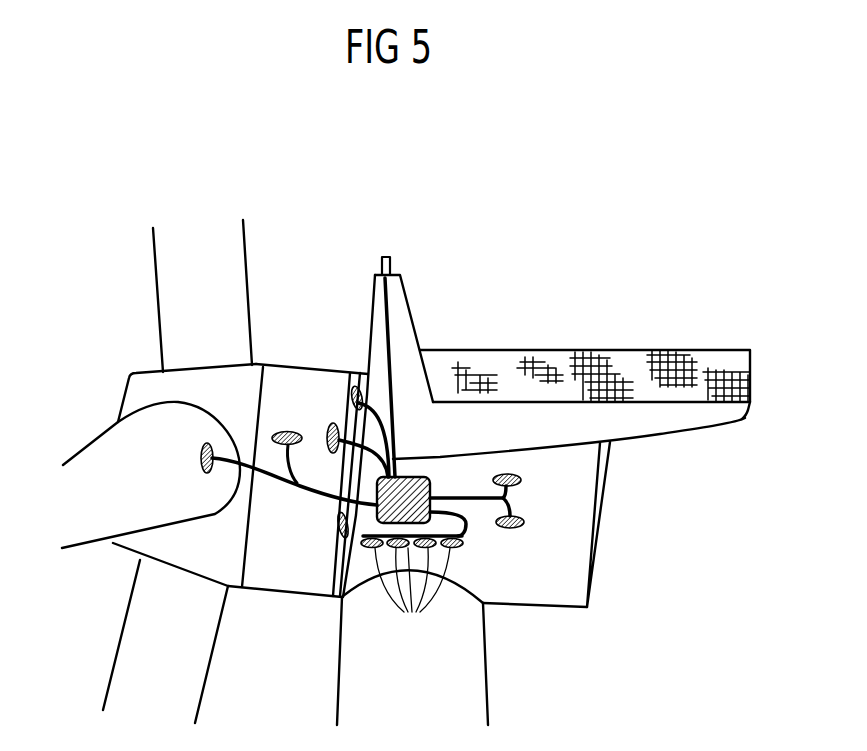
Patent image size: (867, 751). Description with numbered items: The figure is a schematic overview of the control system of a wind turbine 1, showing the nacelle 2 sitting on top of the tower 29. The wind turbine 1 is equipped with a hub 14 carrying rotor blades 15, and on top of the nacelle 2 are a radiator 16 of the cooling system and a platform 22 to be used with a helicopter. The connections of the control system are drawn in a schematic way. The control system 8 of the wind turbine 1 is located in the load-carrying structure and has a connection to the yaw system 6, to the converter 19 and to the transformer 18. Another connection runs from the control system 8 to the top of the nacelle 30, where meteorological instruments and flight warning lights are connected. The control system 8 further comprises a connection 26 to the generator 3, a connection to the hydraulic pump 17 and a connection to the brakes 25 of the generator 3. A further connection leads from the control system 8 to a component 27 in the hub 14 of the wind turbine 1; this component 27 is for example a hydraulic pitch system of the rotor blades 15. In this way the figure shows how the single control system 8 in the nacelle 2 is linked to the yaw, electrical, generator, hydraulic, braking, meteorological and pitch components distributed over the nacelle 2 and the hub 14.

The wind turbine 1 is at (70, 216).
The nacelle 2 is at (598, 573).
The generator 3 is at (288, 364).
The yaw system 6 is at (412, 592).
The control system 8 is at (417, 475).
The hub 14 is at (126, 383).
The rotor blades 15 is at (250, 261).
The radiator 16 is at (407, 291).
The hydraulic pump 17 is at (280, 455).
The transformer 18 is at (524, 522).
The converter 19 is at (522, 480).
The platform to be used with a helicopter 22 is at (622, 348).
The brakes 25 is at (354, 391).
The connection 26 is at (333, 452).
The component 27 is at (197, 457).
The tower 29 is at (487, 670).
The top of the nacelle 30 is at (380, 268).